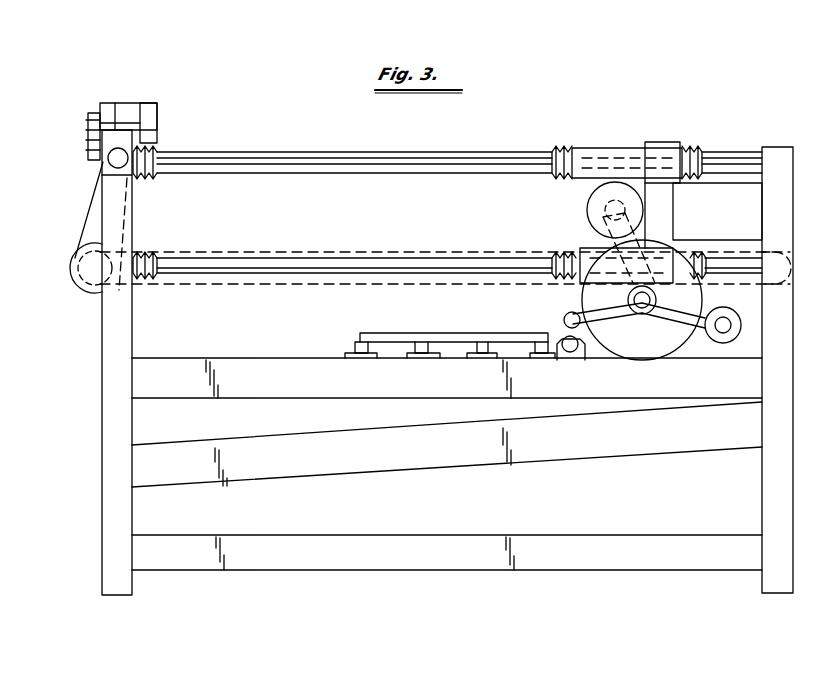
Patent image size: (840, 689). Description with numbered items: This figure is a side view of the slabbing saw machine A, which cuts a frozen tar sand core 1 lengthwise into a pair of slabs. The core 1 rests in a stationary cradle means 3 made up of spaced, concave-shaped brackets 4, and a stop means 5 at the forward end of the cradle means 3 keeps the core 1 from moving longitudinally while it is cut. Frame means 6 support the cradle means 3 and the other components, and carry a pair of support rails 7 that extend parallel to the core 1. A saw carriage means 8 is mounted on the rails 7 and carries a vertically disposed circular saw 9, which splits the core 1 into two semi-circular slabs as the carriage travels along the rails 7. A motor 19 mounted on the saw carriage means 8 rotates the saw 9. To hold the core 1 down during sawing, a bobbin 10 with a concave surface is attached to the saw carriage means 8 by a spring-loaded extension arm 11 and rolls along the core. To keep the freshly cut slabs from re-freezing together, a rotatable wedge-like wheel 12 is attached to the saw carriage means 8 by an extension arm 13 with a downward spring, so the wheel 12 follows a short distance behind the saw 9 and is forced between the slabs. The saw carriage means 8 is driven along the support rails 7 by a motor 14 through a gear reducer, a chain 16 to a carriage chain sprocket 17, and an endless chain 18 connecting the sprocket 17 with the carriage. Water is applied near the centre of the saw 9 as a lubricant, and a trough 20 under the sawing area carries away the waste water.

The slabbing saw machine A is at (289, 68).
The tar sand core 1 is at (390, 332).
The cradle means 3 is at (388, 360).
The concave-shaped brackets 4 is at (478, 360).
The stop means 5 is at (352, 346).
The frame means 6 is at (106, 529).
The support rails 7 is at (306, 162).
The saw carriage means 8 is at (668, 212).
The circular saw 9 is at (655, 350).
The bobbin 10 is at (564, 320).
The spring-loaded extension arm 11 is at (590, 309).
The wedge-like wheel 12 is at (742, 327).
The extension arm 13 is at (700, 306).
The motor 14 is at (153, 116).
The chain 16 is at (88, 223).
The carriage chain sprocket 17 is at (76, 272).
The endless chain 18 is at (398, 252).
The motor 19 is at (588, 209).
The trough 20 is at (148, 454).